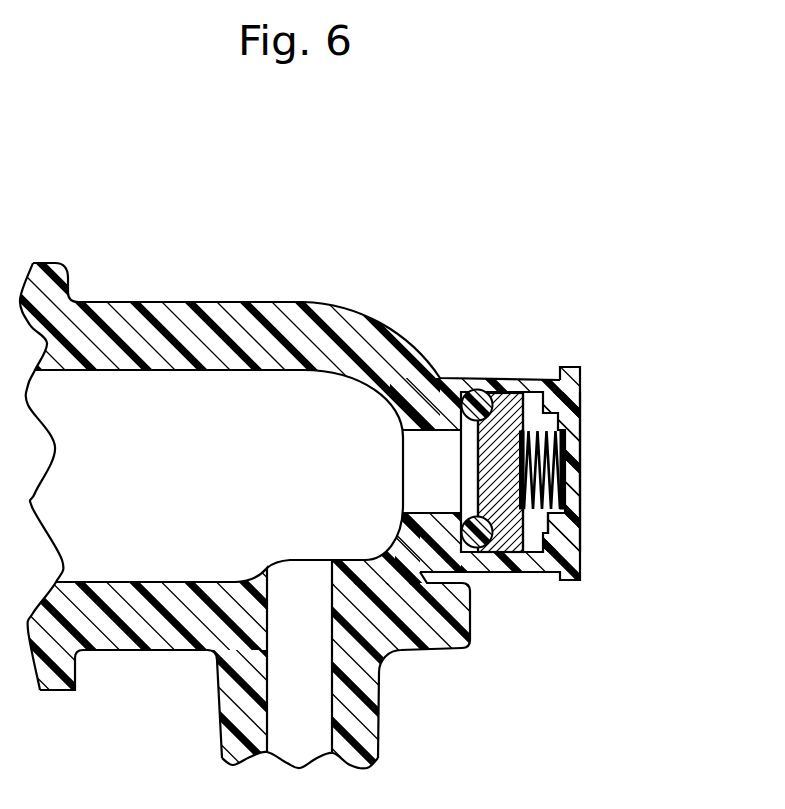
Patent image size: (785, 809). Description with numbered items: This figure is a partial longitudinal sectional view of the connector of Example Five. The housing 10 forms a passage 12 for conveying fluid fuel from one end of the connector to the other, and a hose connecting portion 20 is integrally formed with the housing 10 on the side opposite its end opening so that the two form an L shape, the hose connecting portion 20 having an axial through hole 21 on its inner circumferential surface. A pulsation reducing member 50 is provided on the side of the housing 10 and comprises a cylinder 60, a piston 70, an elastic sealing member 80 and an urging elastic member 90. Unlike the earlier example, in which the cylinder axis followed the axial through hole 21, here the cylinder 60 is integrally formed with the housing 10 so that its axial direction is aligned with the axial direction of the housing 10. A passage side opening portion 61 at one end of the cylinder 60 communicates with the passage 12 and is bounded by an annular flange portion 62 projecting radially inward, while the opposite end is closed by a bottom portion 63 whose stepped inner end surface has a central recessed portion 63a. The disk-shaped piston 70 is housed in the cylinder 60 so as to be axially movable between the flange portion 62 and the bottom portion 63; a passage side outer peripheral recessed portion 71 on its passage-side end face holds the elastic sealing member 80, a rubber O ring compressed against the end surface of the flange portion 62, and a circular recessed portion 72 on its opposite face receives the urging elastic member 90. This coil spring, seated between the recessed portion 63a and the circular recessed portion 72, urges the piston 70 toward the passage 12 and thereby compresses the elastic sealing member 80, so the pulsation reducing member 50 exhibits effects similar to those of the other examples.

The housing 10 is at (117, 317).
The passage 12 is at (303, 426).
The hose connecting portion 20 is at (360, 738).
The axial through hole 21 is at (265, 675).
The pulsation reducing member 50 is at (577, 590).
The cylinder 60 is at (528, 382).
The passage side opening portion 61 is at (442, 513).
The annular flange portion 62 is at (443, 415).
The bottom portion 63 is at (574, 421).
The recessed portion 63a is at (563, 512).
The piston 70 is at (506, 542).
The passage side outer peripheral recessed portion 71 is at (483, 545).
The circular recessed portion 72 is at (521, 498).
The elastic sealing member 80 is at (470, 541).
The urging elastic member 90 is at (556, 449).